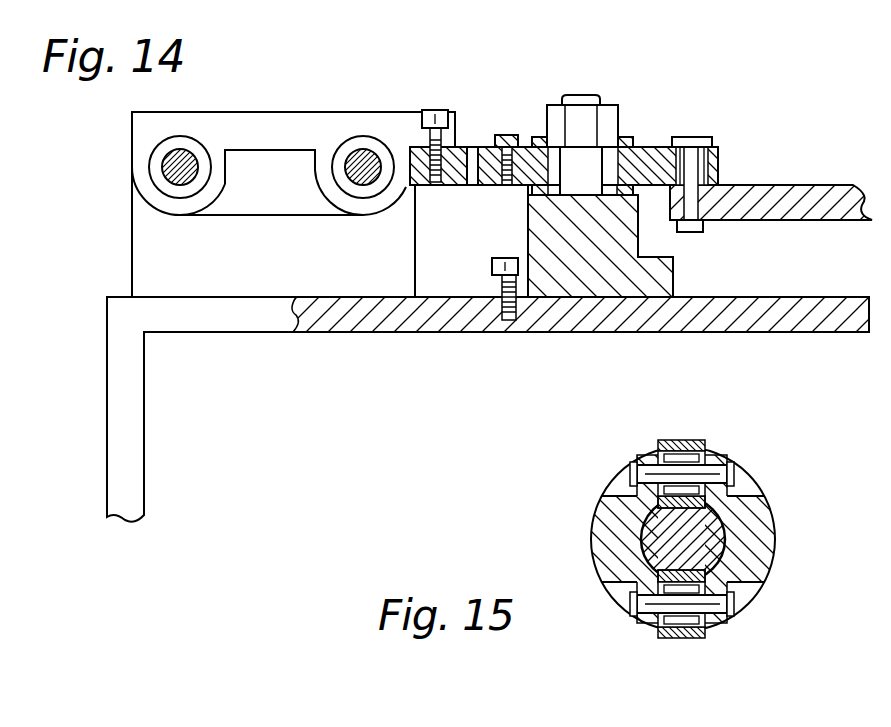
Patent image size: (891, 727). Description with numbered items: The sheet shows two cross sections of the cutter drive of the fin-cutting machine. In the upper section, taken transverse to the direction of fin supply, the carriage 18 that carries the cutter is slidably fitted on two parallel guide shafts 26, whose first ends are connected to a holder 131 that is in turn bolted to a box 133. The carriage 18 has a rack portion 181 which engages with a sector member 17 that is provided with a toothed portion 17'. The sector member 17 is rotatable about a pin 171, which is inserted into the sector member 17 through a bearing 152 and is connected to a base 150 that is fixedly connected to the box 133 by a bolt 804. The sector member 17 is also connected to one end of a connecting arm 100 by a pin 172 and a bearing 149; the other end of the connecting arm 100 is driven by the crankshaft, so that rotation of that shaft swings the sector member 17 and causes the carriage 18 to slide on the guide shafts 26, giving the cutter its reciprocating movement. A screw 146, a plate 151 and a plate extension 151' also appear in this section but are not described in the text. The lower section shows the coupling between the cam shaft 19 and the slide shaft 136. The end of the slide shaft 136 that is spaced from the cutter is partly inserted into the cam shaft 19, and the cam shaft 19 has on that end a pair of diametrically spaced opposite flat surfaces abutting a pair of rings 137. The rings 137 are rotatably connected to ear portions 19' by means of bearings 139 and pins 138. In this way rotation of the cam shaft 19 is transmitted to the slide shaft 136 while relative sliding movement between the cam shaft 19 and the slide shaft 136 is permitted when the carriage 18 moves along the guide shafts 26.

In FIG. 14, the guide shafts 26 is at (348, 153).
In FIG. 14, the carriage 18 is at (373, 133).
In FIG. 14, the cap screw 146 is at (431, 110).
In FIG. 14, the toothed portion 17' is at (500, 130).
In FIG. 14, the bearing 152 is at (534, 137).
In FIG. 14, the pin 171 is at (593, 150).
In FIG. 14, the mounting plate 151 is at (564, 134).
In FIG. 14, the pin 172 is at (694, 140).
In FIG. 14, the bearing 149 is at (708, 162).
In FIG. 14, the connecting arm 100 is at (820, 193).
In FIG. 14, the holder 131 is at (135, 222).
In FIG. 14, the rack portion 181 is at (428, 186).
In FIG. 14, the sector member 17 is at (505, 206).
In FIG. 14, the bolt 804 is at (500, 265).
In FIG. 14, the plate extension 151' is at (686, 230).
In FIG. 14, the base 150 is at (674, 280).
In FIG. 14, the box 133 is at (115, 330).
In FIG. 15, the ear portions 19' is at (697, 538).
In FIG. 15, the rings 137 is at (704, 447).
In FIG. 15, the bearings 139 is at (708, 462).
In FIG. 15, the pins 138 is at (768, 505).
In FIG. 15, the cam shaft 19 is at (702, 539).
In FIG. 15, the slide shaft 136 is at (655, 545).